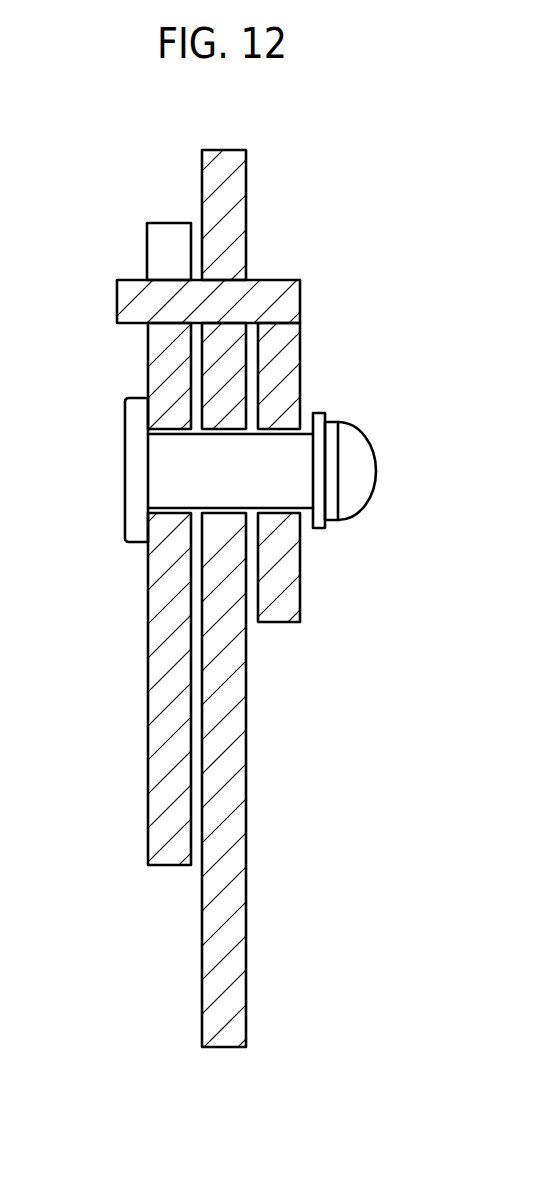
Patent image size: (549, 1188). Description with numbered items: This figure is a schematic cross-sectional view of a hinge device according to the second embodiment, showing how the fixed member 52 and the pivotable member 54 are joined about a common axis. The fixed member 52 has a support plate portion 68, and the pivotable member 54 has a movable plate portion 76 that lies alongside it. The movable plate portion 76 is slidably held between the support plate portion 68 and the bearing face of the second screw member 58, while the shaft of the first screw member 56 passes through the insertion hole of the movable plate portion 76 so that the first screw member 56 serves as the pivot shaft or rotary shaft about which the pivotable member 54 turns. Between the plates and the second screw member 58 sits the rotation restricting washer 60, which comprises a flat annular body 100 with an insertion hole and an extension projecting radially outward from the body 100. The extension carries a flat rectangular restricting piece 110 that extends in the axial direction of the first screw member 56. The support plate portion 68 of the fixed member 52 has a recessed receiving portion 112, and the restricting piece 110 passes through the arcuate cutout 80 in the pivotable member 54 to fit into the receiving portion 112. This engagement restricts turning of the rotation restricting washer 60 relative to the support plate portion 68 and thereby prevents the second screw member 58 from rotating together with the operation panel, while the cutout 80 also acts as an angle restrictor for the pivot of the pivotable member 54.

The fixed member 52 is at (274, 539).
The pivotable member 54 is at (274, 594).
The first screw member 56 is at (137, 495).
The second screw member 58 is at (365, 457).
The rotation restricting washer 60 is at (274, 455).
The support plate portion 68 is at (160, 654).
The movable plate portion 76 is at (235, 718).
The cutout 80 is at (218, 273).
The body 100 is at (272, 385).
The restricting piece 110 is at (263, 297).
The receiving portion 112 is at (163, 262).